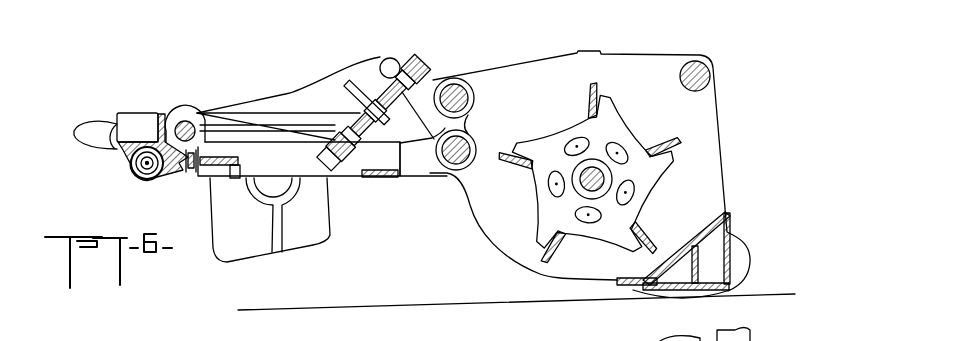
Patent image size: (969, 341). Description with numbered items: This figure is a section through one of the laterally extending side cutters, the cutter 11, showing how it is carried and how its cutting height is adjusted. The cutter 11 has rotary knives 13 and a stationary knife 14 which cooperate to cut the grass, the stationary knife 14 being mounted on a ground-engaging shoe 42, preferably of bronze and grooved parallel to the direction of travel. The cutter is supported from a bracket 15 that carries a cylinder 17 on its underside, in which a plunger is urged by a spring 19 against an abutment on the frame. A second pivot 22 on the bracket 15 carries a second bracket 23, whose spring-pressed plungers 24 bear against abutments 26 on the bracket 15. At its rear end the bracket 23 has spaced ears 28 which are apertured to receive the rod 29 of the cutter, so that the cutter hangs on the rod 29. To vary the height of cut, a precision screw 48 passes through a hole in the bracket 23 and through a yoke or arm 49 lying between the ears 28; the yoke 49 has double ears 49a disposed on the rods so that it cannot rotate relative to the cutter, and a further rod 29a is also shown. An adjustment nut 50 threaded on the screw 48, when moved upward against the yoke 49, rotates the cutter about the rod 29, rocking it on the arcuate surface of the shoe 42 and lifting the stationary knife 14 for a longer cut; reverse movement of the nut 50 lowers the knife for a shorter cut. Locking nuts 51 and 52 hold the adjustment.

The cutter 11 is at (513, 55).
The rotary knives 13 is at (667, 153).
The stationary knife 14 is at (624, 286).
The bracket 15 is at (140, 120).
The cylinder 17 is at (153, 180).
The spring 19 is at (140, 177).
The second pivot 22 is at (199, 113).
The second bracket 23 is at (373, 177).
The spring-pressed plungers 24 is at (192, 172).
The abutments 26 is at (175, 175).
The spaced ears 28 is at (432, 176).
The rod 29 is at (478, 143).
The pin 29a is at (706, 61).
The ground-engaging shoe 42 is at (687, 292).
The precision screw 48 is at (423, 80).
The yoke 49 is at (436, 81).
The double ears 49a is at (477, 115).
The adjustment nut 50 is at (357, 97).
The locking nut 51 is at (337, 128).
The locking nut 52 is at (405, 44).